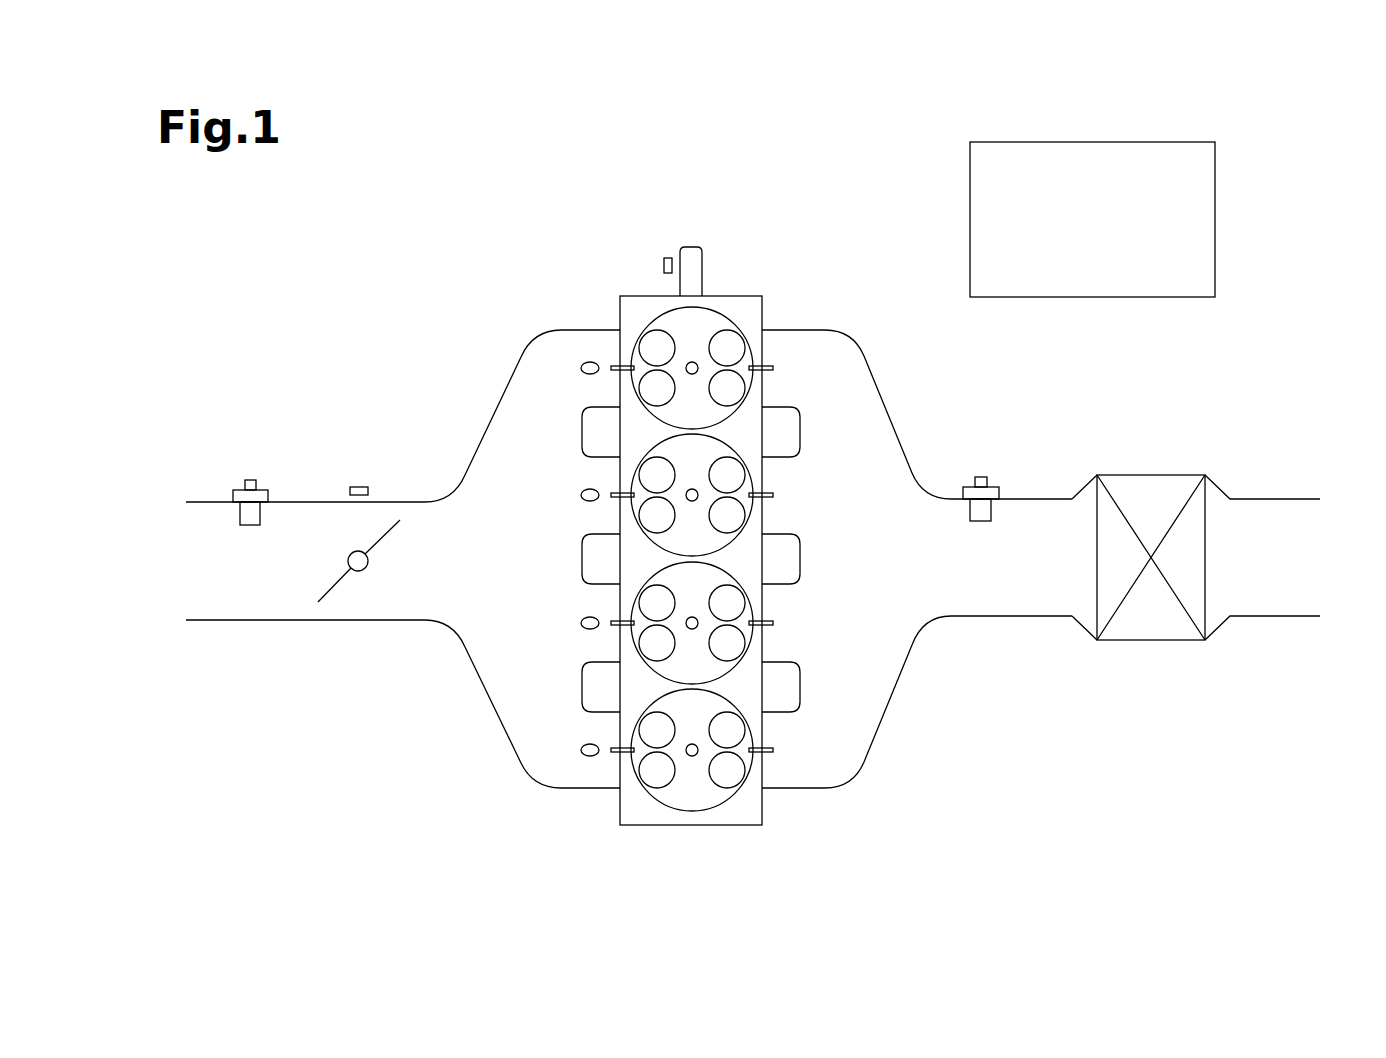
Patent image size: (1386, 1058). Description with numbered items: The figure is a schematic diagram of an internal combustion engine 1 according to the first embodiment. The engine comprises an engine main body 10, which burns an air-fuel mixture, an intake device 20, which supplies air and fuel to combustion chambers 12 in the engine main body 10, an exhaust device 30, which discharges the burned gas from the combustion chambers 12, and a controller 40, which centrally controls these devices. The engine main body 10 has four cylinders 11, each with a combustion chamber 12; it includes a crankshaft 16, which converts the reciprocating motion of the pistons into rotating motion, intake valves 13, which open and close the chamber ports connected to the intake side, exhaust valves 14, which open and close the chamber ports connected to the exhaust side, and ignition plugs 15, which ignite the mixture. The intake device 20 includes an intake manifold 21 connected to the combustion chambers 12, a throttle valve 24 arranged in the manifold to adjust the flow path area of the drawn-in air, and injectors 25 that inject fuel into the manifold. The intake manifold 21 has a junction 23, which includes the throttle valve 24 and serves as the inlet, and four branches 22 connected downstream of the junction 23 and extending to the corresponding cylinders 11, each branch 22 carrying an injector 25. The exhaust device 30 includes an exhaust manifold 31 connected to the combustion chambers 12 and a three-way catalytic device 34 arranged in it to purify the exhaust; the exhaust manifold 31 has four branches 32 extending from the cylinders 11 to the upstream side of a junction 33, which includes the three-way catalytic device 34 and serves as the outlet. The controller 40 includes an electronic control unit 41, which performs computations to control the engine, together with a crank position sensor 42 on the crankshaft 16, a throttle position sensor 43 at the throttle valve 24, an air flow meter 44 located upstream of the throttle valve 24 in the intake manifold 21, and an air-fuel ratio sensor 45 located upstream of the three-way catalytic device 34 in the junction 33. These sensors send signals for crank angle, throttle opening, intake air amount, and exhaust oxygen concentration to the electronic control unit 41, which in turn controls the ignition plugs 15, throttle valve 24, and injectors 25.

The internal combustion engine 1 is at (484, 228).
The engine main body 10 is at (692, 832).
The cylinder 11 is at (753, 353).
The combustion chamber 12 is at (720, 314).
The intake valve 13 is at (685, 377).
The exhaust valve 14 is at (700, 377).
The ignition plug 15 is at (692, 361).
The crankshaft 16 is at (706, 262).
The intake device 20 is at (335, 405).
The intake manifold 21 is at (481, 444).
The branch 22 is at (587, 330).
The junction 23 is at (244, 622).
The throttle valve 24 is at (390, 530).
The injector 25 is at (581, 368).
The exhaust device 30 is at (1030, 420).
The exhaust manifold 31 is at (904, 444).
The branch 32 is at (797, 330).
The junction 33 is at (1008, 616).
The three-way catalytic device 34 is at (1150, 478).
The controller 40 is at (1155, 121).
The electronic control unit 41 is at (1092, 142).
The crank position sensor 42 is at (668, 257).
The throttle position sensor 43 is at (358, 487).
The air flow meter 44 is at (240, 487).
The air-fuel ratio sensor 45 is at (986, 478).